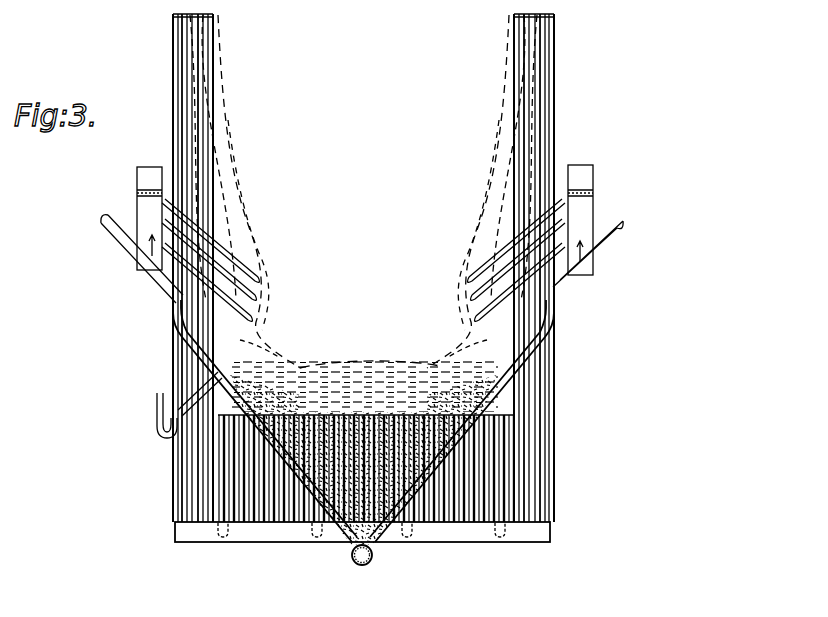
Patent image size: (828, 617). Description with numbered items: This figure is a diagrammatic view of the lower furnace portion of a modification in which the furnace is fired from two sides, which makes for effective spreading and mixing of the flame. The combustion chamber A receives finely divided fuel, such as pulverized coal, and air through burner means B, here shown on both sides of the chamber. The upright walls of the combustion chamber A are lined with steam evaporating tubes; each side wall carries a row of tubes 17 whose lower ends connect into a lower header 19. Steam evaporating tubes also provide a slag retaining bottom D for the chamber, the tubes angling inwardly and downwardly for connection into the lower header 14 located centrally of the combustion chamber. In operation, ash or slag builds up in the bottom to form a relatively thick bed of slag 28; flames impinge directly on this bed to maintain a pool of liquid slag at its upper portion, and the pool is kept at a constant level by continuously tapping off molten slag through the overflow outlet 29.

The lower header 14 is at (373, 561).
The tubes 17 is at (536, 440).
The lower header 19 is at (537, 535).
The bed of slag 28 is at (340, 480).
The overflow outlet 29 is at (188, 384).
The combustion chamber A is at (363, 191).
The burner means B is at (361, 243).
The slag retaining bottom D is at (420, 497).